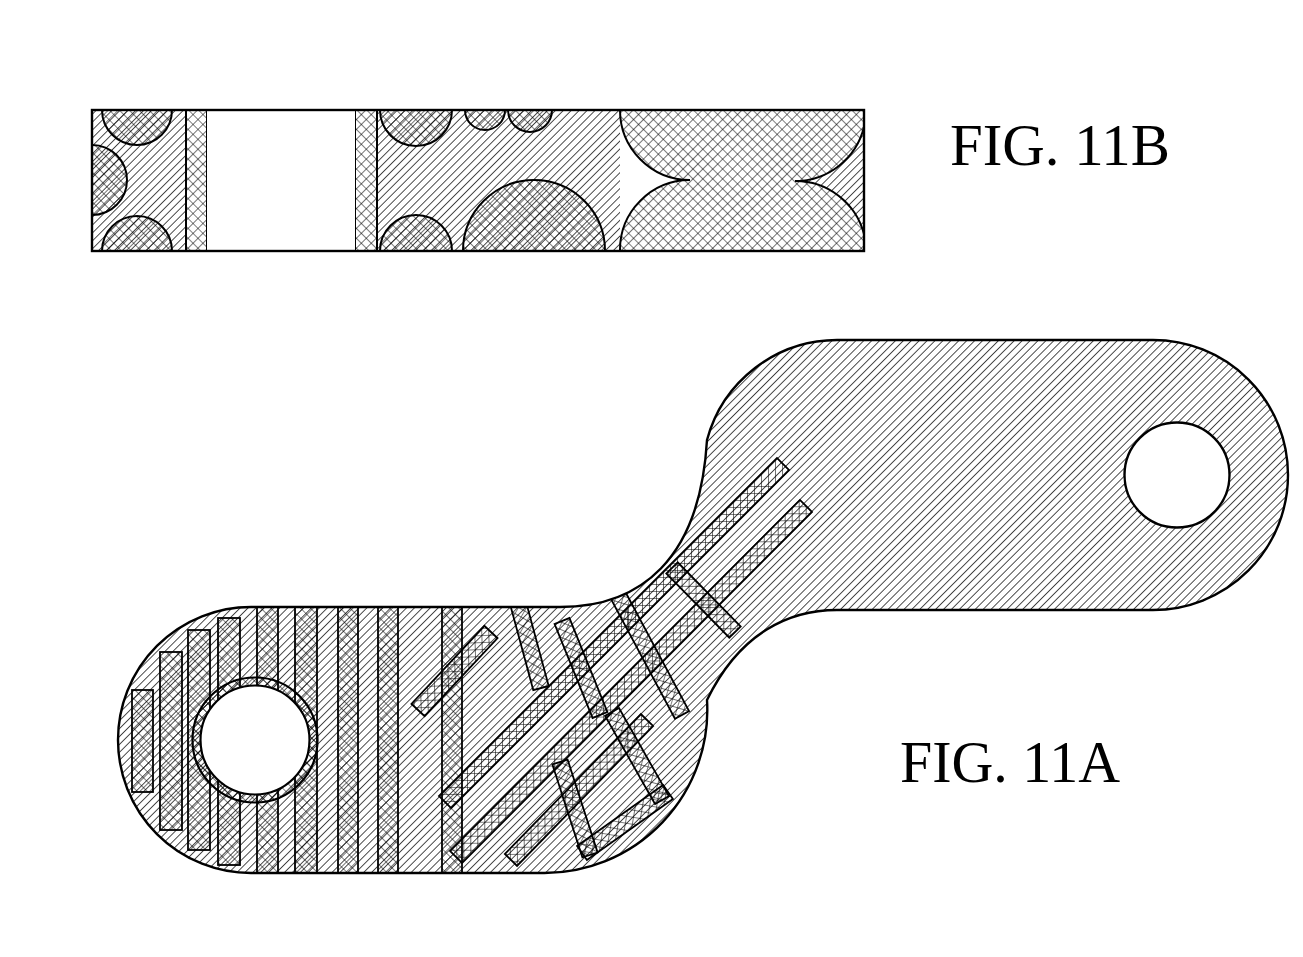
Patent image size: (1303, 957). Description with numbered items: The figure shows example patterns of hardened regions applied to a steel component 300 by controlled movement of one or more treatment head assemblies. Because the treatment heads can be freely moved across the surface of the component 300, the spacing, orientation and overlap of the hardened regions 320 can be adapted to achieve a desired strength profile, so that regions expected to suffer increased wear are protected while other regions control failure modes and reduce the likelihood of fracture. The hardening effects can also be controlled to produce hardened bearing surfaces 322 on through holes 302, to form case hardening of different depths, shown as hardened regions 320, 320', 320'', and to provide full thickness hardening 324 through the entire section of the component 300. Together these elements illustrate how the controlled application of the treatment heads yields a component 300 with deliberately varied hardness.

In FIG. 11A, the component 300 is at (1040, 360).
In FIG. 11B, the through hole 302 is at (295, 128).
In FIG. 11B, the hardened region 320 is at (366, 279).
In FIG. 11A, the hardened region 320 is at (581, 662).
In FIG. 11B, the hardened region of different depth 320' is at (482, 283).
In FIG. 11B, the hardened region of different depth 320'' is at (464, 81).
In FIG. 11B, the hardened bearing surface 322 is at (200, 240).
In FIG. 11A, the hardened bearing surface 322 is at (280, 688).
In FIG. 11B, the full thickness hardening 324 is at (778, 125).